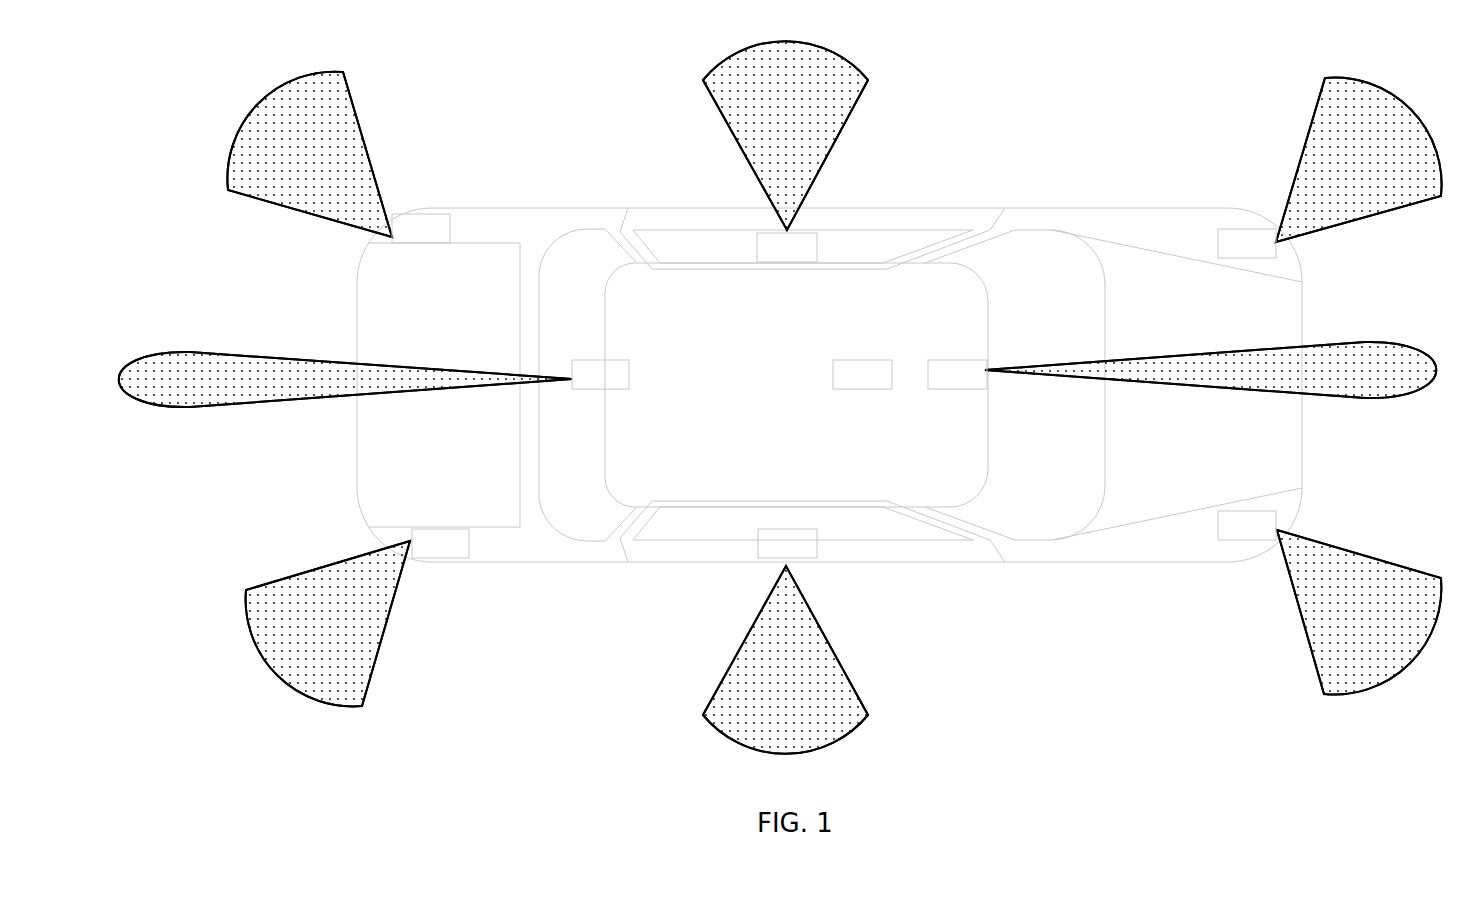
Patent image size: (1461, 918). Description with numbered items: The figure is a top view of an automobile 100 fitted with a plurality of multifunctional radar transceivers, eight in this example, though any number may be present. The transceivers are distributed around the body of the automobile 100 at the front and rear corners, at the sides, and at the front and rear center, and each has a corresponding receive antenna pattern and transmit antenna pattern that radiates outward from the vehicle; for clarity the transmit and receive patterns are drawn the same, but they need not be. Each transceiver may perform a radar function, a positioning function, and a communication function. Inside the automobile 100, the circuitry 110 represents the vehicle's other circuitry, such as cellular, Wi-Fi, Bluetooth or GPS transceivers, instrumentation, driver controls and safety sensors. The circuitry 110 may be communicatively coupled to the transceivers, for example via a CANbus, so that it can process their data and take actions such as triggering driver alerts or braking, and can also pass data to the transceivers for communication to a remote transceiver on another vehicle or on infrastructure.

The automobile 100 is at (683, 208).
The circuitry 110 is at (879, 382).